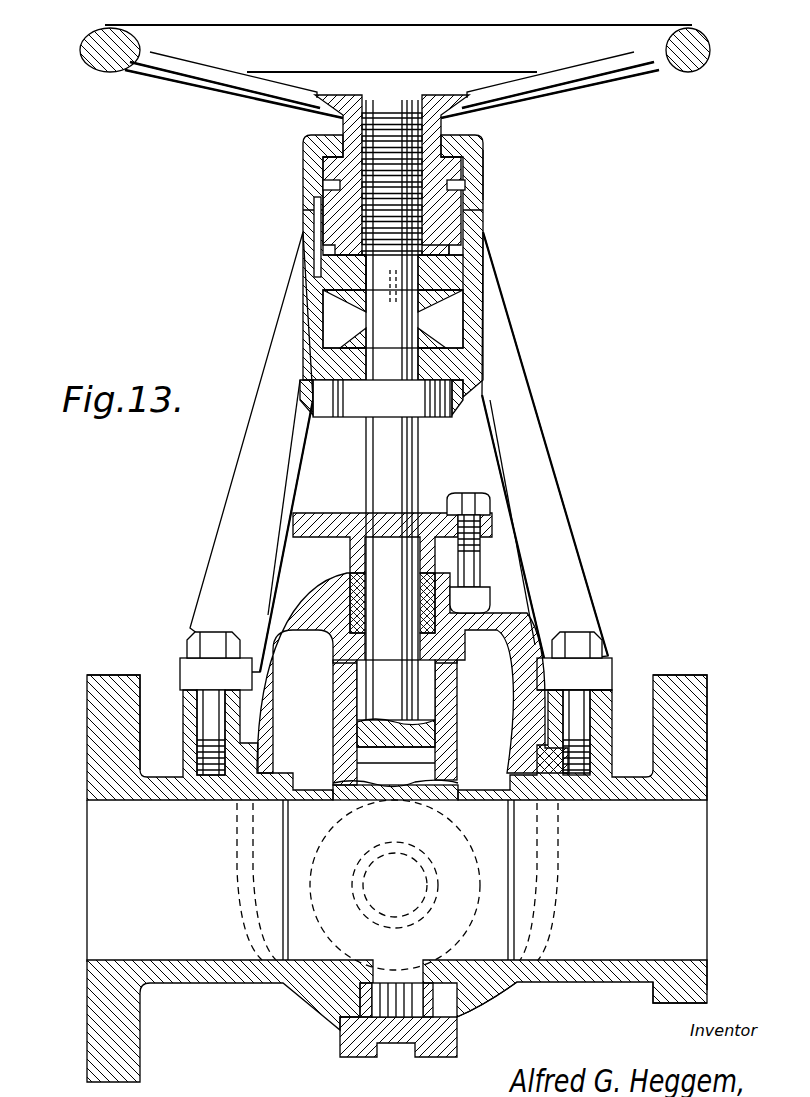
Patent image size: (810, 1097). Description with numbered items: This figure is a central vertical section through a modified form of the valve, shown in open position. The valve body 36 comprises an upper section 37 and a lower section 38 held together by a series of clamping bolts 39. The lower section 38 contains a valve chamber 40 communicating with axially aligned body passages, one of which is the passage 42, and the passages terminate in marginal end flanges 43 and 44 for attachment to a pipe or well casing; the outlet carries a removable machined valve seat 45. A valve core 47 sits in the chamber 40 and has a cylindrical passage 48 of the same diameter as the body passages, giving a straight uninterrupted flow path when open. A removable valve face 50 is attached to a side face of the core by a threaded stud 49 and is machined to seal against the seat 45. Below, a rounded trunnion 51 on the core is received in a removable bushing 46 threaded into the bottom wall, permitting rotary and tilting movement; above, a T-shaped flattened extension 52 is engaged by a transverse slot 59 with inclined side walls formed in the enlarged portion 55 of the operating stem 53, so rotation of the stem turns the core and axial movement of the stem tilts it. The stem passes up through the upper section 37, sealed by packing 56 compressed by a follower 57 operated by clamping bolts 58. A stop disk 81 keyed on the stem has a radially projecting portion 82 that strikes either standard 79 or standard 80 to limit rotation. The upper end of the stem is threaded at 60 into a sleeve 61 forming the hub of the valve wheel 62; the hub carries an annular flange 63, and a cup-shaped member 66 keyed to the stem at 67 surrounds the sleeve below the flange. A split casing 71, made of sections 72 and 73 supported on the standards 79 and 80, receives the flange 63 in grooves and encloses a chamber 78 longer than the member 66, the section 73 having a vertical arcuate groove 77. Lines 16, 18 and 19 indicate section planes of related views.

The valve wheel or handle 62 is at (612, 70).
The external screw threads 60 is at (462, 140).
The sleeve 61 is at (465, 160).
The two-part casing 71 is at (501, 174).
The annular flange 63 is at (303, 162).
The section line 19 is at (303, 182).
The section line 16 is at (303, 210).
The vertical groove 77 is at (318, 232).
The cup-shaped member 66 is at (465, 240).
The casing section 72 is at (466, 284).
The casing section 73 is at (323, 292).
The chamber 78 is at (455, 313).
The key 67 is at (376, 300).
The section line 18 is at (303, 380).
The radially-projecting portion 82 is at (312, 418).
The stop disk 81 is at (450, 417).
The operating stem 53 is at (418, 486).
The follower 57 is at (350, 513).
The packing 56 is at (336, 590).
The clamping bolts 58 is at (468, 558).
The standard 80 is at (213, 568).
The standard 79 is at (562, 540).
The clamping bolts 39 is at (198, 644).
The transverse slot 59 is at (578, 644).
The upper section 37 is at (612, 690).
The valve body 36 is at (721, 703).
The marginal end flange 44 is at (96, 750).
The marginal end flange 43 is at (690, 733).
The enlarged portion 55 is at (400, 687).
The flattened extension 52 is at (415, 757).
The valve core 47 is at (680, 877).
The passage 48 is at (398, 885).
The removable valve face 50 is at (312, 845).
The threaded stud 49 is at (416, 890).
The valve seat 45 is at (522, 867).
The passage 42 is at (106, 878).
The lower section 38 is at (585, 976).
The valve chamber 40 is at (450, 994).
The trunnion 51 is at (345, 1030).
The removable bushing 46 is at (410, 1057).